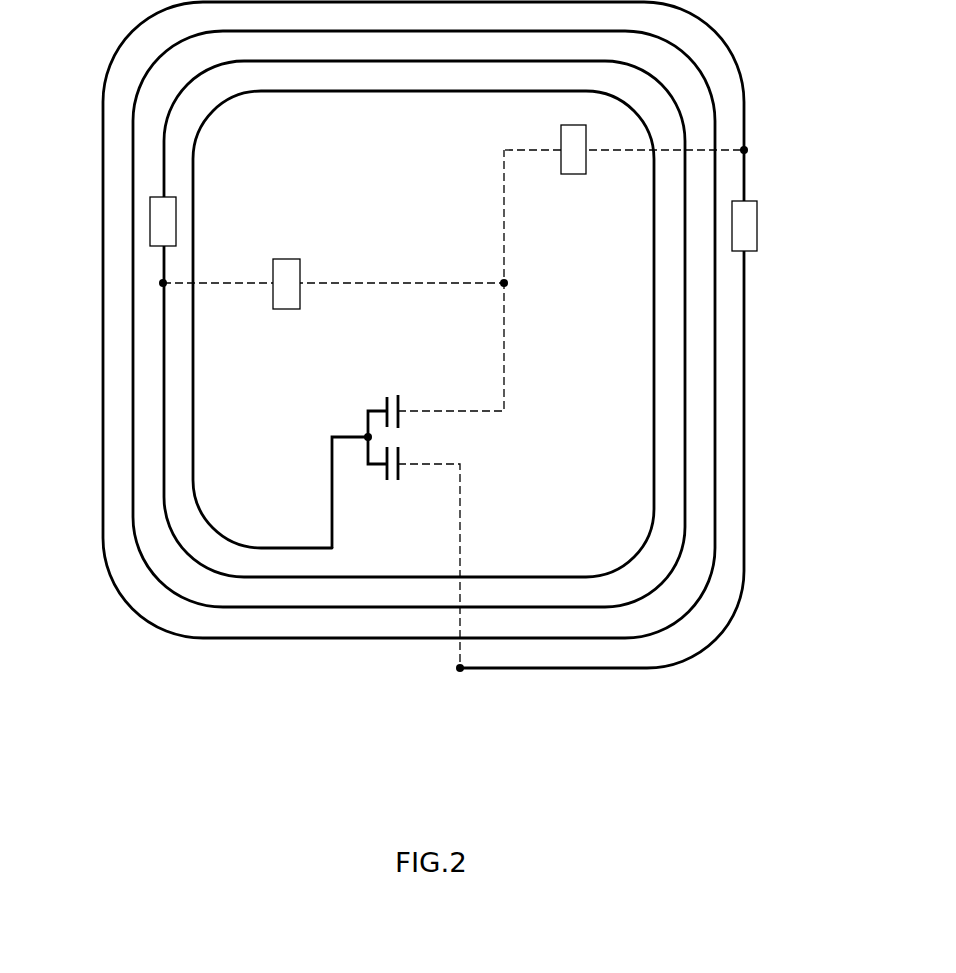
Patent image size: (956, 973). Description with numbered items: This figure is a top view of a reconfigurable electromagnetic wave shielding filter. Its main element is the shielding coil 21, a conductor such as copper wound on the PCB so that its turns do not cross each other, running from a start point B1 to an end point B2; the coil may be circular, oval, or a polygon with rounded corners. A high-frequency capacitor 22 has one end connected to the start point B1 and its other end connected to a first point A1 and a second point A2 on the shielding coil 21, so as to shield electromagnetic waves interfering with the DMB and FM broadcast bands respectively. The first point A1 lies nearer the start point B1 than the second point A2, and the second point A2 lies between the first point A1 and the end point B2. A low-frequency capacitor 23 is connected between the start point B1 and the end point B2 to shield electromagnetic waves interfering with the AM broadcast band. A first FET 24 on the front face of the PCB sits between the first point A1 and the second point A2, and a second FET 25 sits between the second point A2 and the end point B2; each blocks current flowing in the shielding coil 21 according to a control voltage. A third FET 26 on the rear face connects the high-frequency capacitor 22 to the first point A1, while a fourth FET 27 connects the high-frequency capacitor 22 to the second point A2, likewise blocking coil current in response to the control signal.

The shielding coil 21 is at (747, 393).
The high-frequency capacitor 22 is at (396, 394).
The low-frequency capacitor 23 is at (397, 481).
The first FET 24 is at (150, 219).
The second FET 25 is at (759, 224).
The third FET 26 is at (285, 258).
The fourth FET 27 is at (572, 176).
The first point A1 is at (160, 283).
The second point A2 is at (752, 150).
The start point B1 is at (366, 433).
The end point B2 is at (460, 673).